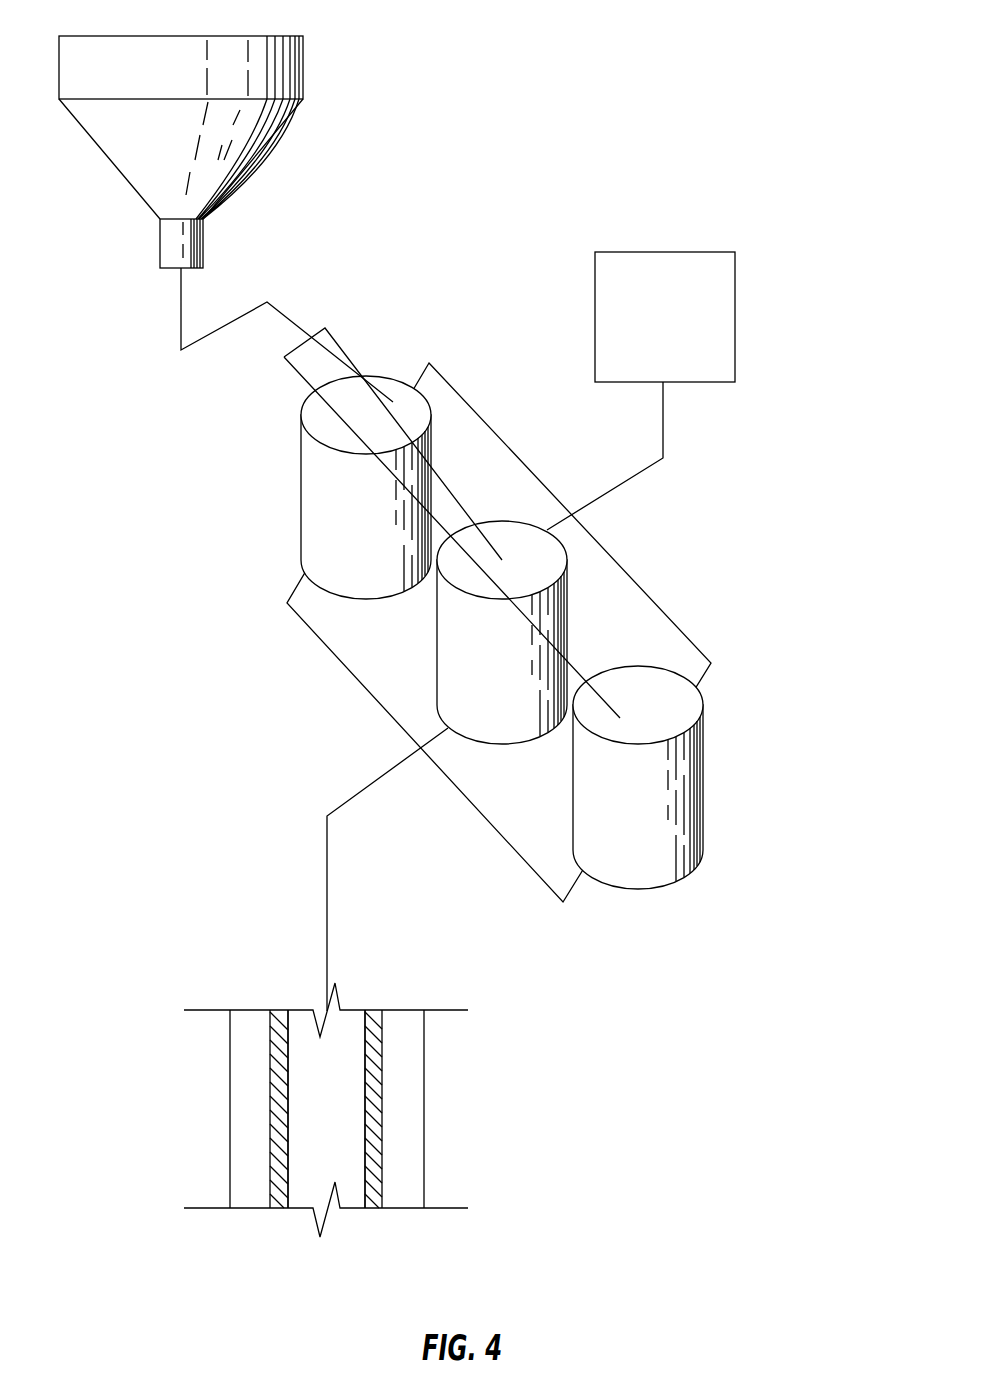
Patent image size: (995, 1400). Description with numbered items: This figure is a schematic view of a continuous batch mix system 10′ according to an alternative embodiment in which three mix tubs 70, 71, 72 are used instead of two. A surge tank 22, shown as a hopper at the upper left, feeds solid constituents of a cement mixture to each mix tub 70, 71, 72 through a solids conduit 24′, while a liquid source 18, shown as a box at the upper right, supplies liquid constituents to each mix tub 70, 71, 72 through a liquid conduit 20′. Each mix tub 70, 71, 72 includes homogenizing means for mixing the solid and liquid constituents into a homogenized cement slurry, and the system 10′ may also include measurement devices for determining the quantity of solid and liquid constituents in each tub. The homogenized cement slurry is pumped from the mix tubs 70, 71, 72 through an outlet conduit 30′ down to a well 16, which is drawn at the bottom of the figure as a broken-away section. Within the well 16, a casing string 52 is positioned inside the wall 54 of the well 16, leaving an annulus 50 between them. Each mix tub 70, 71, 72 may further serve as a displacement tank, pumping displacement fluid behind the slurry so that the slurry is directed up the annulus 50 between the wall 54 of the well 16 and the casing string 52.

The continuous batch mix system 10′ is at (601, 83).
The surge tank 22 is at (117, 138).
The solids conduit 24′ is at (180, 318).
The liquid source 18 is at (735, 312).
The liquid conduit 20′ is at (663, 428).
The mix tub 70 is at (312, 489).
The mix tub 71 is at (450, 618).
The mix tub 72 is at (590, 778).
The outlet conduit 30′ is at (365, 789).
The well 16 is at (347, 1095).
The annulus 50 is at (410, 1050).
The casing string 52 is at (383, 1128).
The wall 54 is at (424, 1178).